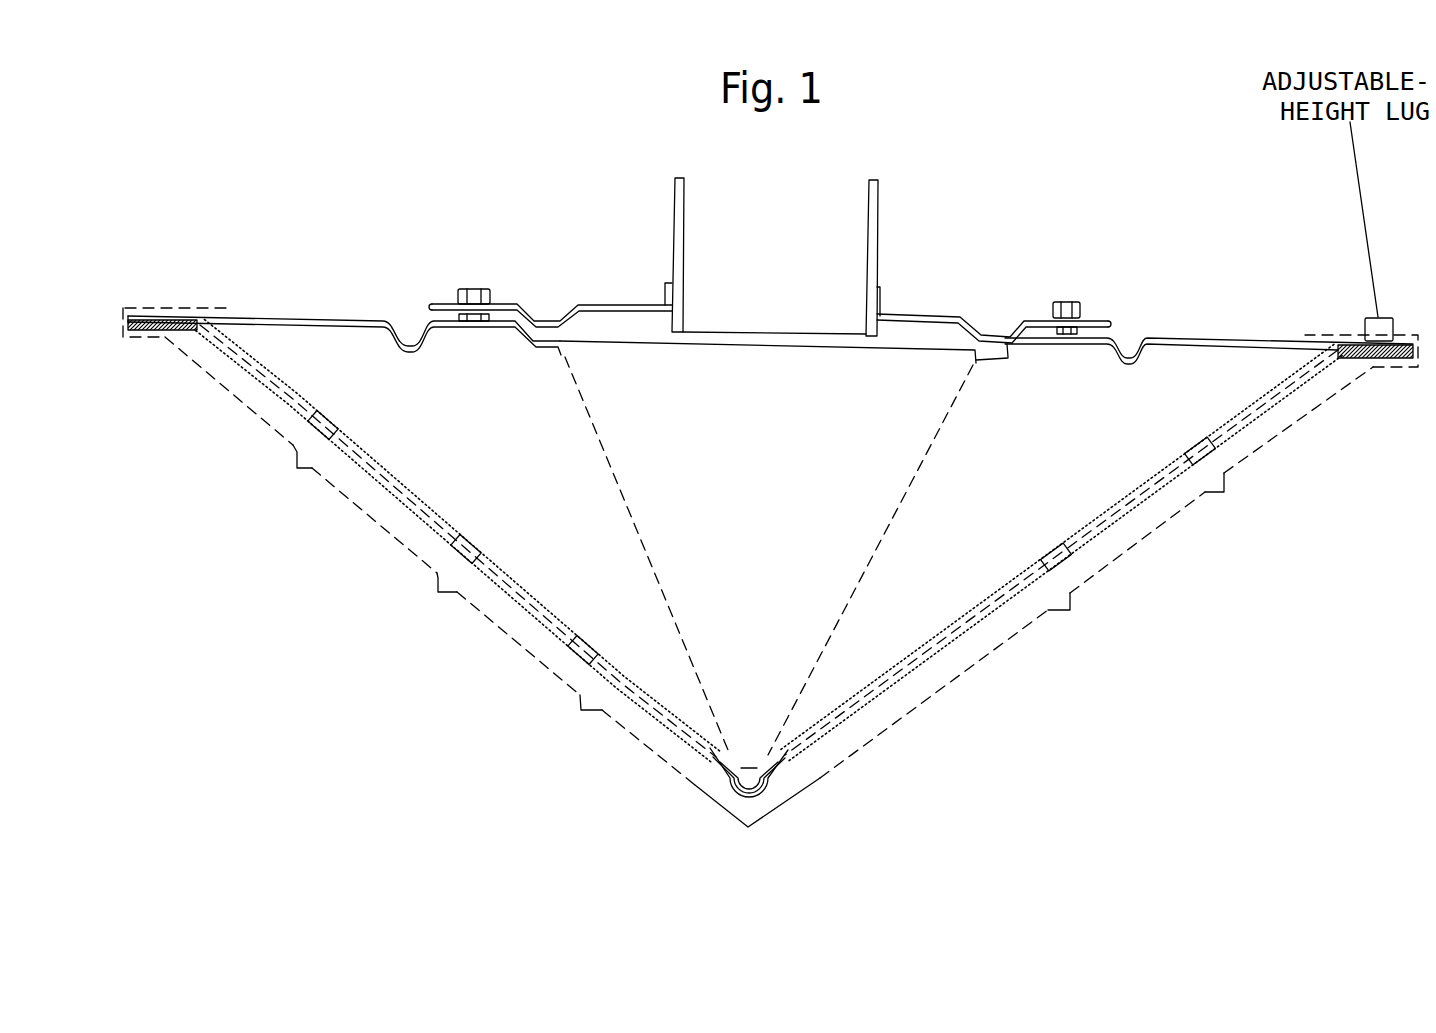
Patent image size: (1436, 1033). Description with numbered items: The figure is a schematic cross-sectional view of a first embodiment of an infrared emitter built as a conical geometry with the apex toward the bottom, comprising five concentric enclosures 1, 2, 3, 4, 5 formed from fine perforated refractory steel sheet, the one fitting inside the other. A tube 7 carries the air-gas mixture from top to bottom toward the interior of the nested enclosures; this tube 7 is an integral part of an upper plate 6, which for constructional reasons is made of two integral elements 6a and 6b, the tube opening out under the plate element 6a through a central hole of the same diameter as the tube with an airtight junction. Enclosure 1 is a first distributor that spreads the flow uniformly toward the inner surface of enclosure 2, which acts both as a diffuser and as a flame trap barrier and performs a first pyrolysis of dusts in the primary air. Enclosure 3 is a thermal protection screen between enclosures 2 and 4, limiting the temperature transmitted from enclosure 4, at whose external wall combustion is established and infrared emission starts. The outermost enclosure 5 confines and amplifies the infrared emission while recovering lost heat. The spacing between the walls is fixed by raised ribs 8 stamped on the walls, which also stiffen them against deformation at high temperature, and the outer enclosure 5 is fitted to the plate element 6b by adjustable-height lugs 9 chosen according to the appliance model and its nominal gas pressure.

The enclosure 1 is at (933, 435).
The enclosure 2 is at (1172, 465).
The enclosure 3 is at (1103, 527).
The enclosure 4 is at (1008, 605).
The enclosure 5 is at (977, 665).
The upper plate 6 is at (770, 257).
The plate element 6a is at (1318, 190).
The plate element 6b is at (1318, 190).
The tube 7 is at (875, 228).
The raised ribs 8 is at (1222, 491).
The adjustable-height lugs 9 is at (1395, 338).